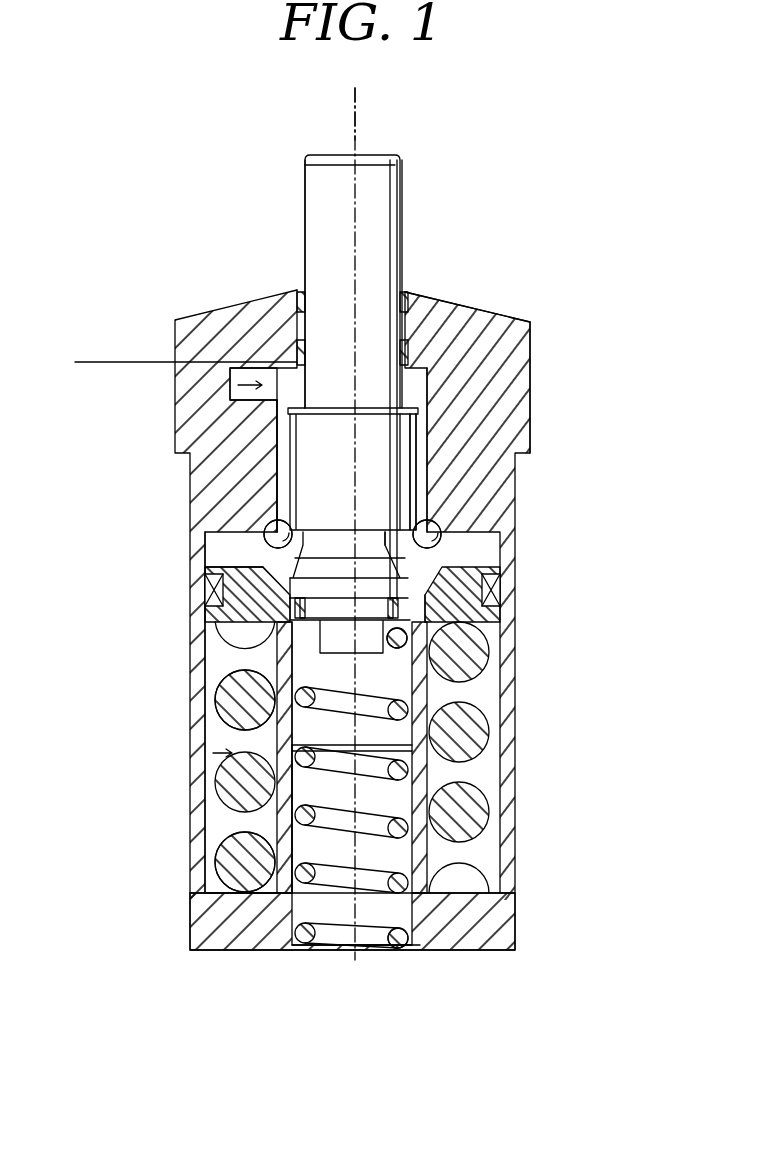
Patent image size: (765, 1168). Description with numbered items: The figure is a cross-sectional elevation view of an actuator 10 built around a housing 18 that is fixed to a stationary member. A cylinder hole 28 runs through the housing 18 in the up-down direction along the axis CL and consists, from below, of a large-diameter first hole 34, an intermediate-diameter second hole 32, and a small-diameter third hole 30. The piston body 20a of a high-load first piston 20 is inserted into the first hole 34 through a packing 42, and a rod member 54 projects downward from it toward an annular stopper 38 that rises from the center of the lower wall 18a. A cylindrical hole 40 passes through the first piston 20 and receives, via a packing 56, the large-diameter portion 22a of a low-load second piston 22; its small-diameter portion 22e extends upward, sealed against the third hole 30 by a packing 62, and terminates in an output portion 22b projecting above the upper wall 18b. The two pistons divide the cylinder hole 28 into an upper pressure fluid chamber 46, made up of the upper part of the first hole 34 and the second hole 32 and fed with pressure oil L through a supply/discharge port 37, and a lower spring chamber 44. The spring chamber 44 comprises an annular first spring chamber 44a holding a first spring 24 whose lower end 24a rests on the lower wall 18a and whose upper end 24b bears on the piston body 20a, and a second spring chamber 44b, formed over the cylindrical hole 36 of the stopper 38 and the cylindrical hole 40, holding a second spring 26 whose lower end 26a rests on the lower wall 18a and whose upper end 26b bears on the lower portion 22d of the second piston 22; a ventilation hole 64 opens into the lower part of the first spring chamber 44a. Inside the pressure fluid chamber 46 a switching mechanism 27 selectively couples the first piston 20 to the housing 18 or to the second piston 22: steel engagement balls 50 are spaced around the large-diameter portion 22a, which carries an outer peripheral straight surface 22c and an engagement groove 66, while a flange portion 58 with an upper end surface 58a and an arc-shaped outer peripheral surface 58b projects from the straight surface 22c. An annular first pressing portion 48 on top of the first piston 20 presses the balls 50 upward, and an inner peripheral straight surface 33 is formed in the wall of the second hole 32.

The actuator 10 is at (548, 158).
The housing 18 is at (533, 348).
The lower wall 18a is at (376, 935).
The upper wall 18b is at (495, 312).
The first piston 20 is at (478, 578).
The piston body 20a is at (432, 580).
The second piston 22 is at (300, 470).
The large-diameter portion 22a is at (410, 470).
The output portion 22b is at (305, 205).
The outer peripheral straight surface 22c is at (405, 450).
The lower portion 22d is at (296, 695).
The small-diameter portion 22e is at (400, 230).
The first spring 24 is at (485, 792).
The lower end 24a is at (222, 842).
The upper end 24b is at (225, 670).
The second spring 26 is at (480, 830).
The lower end 26a is at (515, 918).
The upper end 26b is at (405, 648).
The switching mechanism 27 is at (430, 485).
The cylinder hole 28 is at (280, 695).
The third hole 30 is at (296, 338).
The second hole 32 is at (275, 403).
The inner peripheral straight surface 33 is at (430, 492).
The first hole 34 is at (205, 527).
The cylindrical hole 36 is at (300, 925).
The supply/discharge port 37 is at (278, 383).
The annular stopper 38 is at (300, 788).
The cylindrical hole 40 is at (250, 570).
The packing 42 is at (492, 598).
The spring chamber 44 is at (207, 760).
The first spring chamber 44a is at (230, 815).
The second spring chamber 44b is at (343, 912).
The pressure fluid chamber 46 is at (277, 432).
The first pressing portion 48 is at (432, 548).
The engagement balls 50 is at (265, 526).
The rod member 54 is at (300, 738).
The packing 56 is at (420, 632).
The flange portion 58 is at (430, 405).
The upper end surface 58a is at (530, 345).
The outer peripheral surface 58b is at (422, 440).
The packing 62 is at (410, 300).
The ventilation hole 64 is at (215, 888).
The engagement groove 66 is at (272, 546).
The axis CL is at (357, 113).
The pressure oil L is at (177, 364).